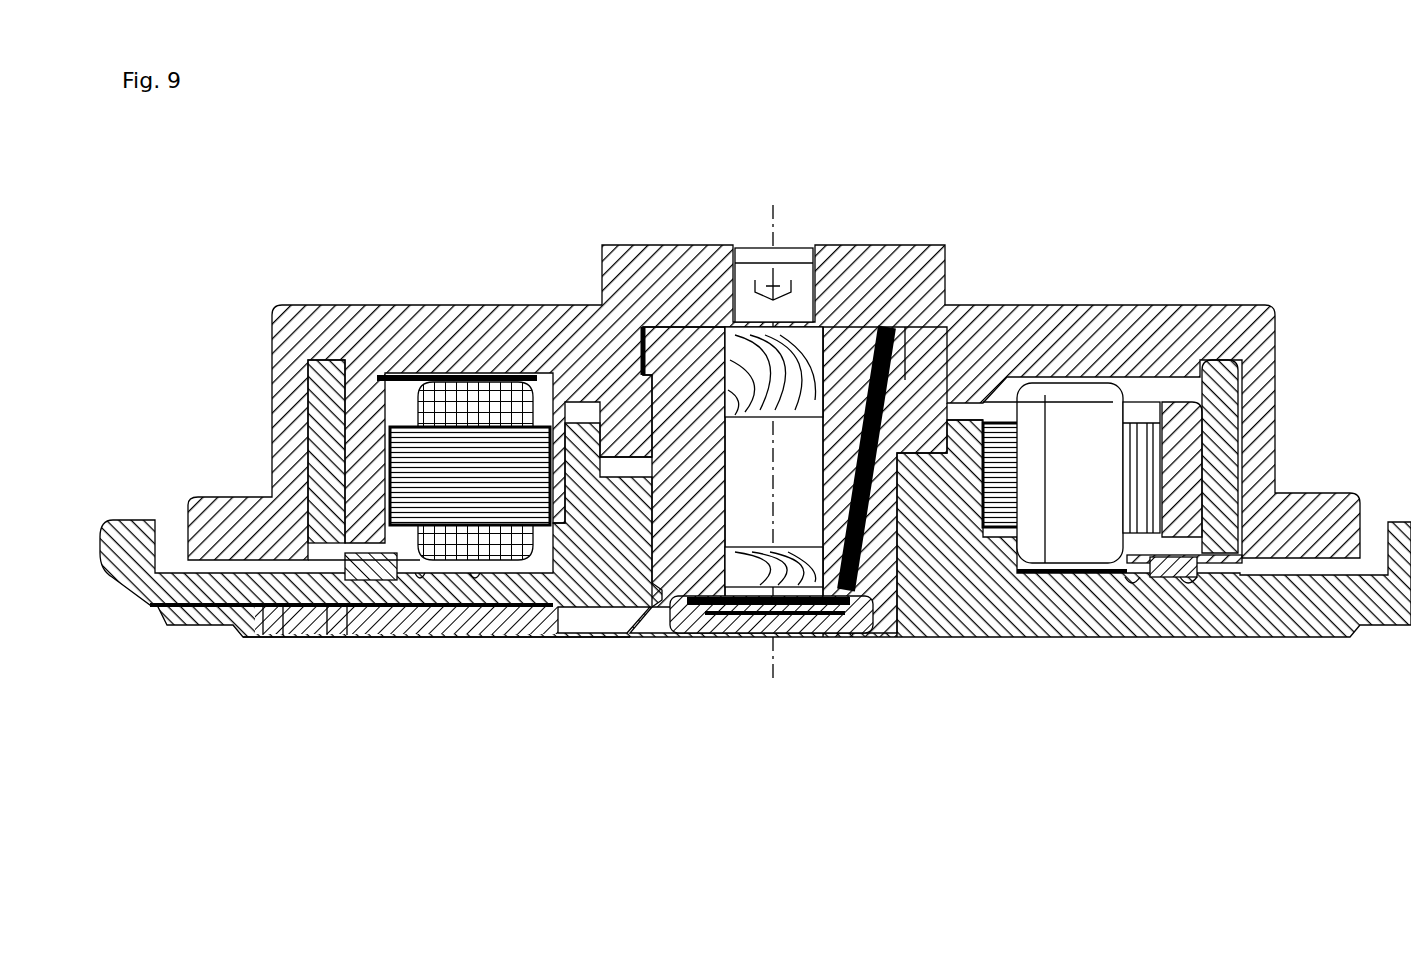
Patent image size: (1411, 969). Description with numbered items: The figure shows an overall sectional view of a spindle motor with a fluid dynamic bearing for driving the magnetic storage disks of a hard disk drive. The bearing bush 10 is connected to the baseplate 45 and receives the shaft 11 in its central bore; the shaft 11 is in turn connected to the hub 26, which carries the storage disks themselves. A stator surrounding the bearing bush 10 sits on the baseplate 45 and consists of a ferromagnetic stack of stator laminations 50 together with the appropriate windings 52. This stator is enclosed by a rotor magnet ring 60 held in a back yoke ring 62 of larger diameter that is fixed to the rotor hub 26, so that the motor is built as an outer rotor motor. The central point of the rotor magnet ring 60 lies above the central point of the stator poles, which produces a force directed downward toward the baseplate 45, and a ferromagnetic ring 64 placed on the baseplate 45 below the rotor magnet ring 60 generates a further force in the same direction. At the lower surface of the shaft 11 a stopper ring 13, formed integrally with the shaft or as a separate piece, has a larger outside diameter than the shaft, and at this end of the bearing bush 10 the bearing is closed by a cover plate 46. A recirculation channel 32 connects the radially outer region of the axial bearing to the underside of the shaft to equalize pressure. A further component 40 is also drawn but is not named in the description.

The bearing bush 10 is at (690, 365).
The shaft 11 is at (803, 300).
The stopper ring 13 is at (730, 637).
The hub 26 is at (1055, 333).
The recirculation channel 32 is at (880, 600).
The bearing carrier 40 is at (917, 362).
The baseplate 45 is at (1240, 603).
The cover plate 46 is at (678, 637).
The stack of stator laminations 50 is at (410, 472).
The windings 52 is at (470, 410).
The rotor magnet ring 60 is at (1180, 433).
The back yoke ring 62 is at (1218, 417).
The ferromagnetic ring 64 is at (1173, 575).